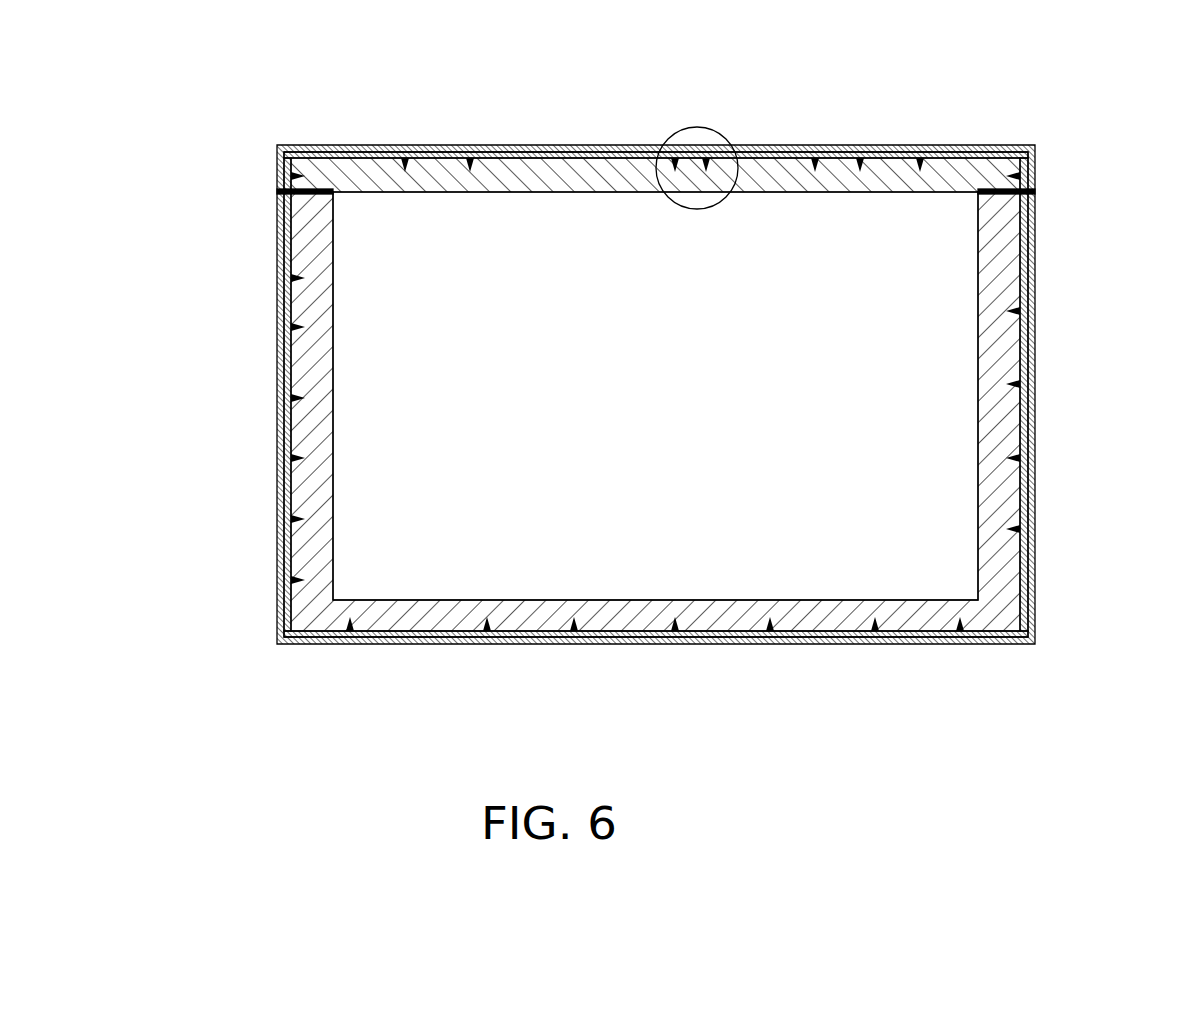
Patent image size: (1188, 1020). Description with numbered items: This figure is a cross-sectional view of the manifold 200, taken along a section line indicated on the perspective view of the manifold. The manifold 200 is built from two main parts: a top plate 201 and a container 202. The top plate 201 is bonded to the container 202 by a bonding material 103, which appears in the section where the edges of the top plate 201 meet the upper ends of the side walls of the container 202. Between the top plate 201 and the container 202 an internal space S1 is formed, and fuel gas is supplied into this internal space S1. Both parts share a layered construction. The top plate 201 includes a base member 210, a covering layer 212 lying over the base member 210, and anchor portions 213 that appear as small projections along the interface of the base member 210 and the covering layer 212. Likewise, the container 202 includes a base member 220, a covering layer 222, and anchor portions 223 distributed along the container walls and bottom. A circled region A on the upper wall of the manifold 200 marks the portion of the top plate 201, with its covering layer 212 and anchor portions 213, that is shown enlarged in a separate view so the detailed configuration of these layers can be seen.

The manifold 200 is at (651, 395).
The top plate 201 is at (656, 106).
The container 202 is at (656, 464).
The base member 210 is at (556, 164).
The covering layer 212 is at (622, 154).
The anchor portions 213 is at (573, 78).
The base member 220 is at (585, 642).
The covering layer 222 is at (637, 636).
The anchor portions 223 is at (572, 715).
The bonding material 103 is at (283, 192).
The internal space S1 is at (668, 405).
The region A is at (733, 142).